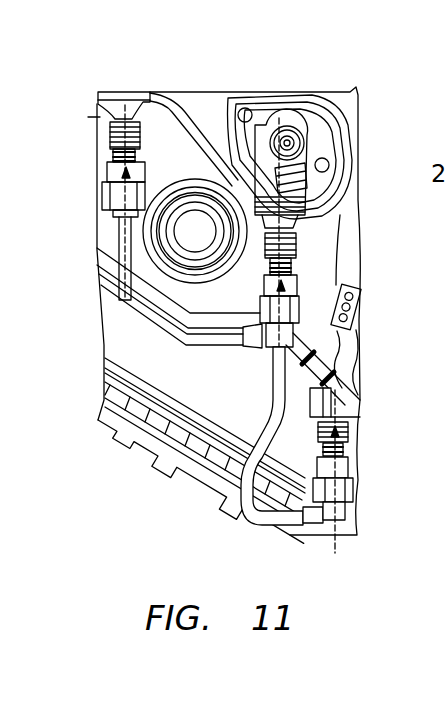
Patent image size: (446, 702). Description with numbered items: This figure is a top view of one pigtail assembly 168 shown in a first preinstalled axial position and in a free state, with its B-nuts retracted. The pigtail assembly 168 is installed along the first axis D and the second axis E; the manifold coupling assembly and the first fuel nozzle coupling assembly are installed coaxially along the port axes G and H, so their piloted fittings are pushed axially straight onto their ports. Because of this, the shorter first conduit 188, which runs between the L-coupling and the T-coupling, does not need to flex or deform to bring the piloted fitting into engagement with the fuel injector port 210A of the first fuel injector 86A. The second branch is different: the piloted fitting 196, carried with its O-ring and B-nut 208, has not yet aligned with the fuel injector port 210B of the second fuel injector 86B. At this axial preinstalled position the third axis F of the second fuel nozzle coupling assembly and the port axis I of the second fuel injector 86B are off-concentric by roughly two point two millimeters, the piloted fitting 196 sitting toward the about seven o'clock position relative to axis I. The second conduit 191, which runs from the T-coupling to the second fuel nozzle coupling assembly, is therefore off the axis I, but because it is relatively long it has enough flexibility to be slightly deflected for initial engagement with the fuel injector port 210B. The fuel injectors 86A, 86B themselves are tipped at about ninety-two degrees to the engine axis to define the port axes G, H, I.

The second fuel injector 86B is at (135, 93).
The fuel injector port of the second fuel injector 210B is at (142, 128).
The piloted fitting 196 is at (118, 157).
The B-nut 208 is at (108, 192).
The port axis I is at (82, 117).
The third axis F is at (110, 270).
The second conduit 191 is at (147, 308).
The first fuel injector 86A is at (266, 120).
The fuel injector port of the first fuel injector 210A is at (305, 240).
The port axis H is at (302, 250).
The second axis E is at (262, 352).
The pigtail assembly 168 is at (264, 392).
The port axis G is at (360, 400).
The first axis D is at (335, 546).
The first conduit 188 is at (222, 496).